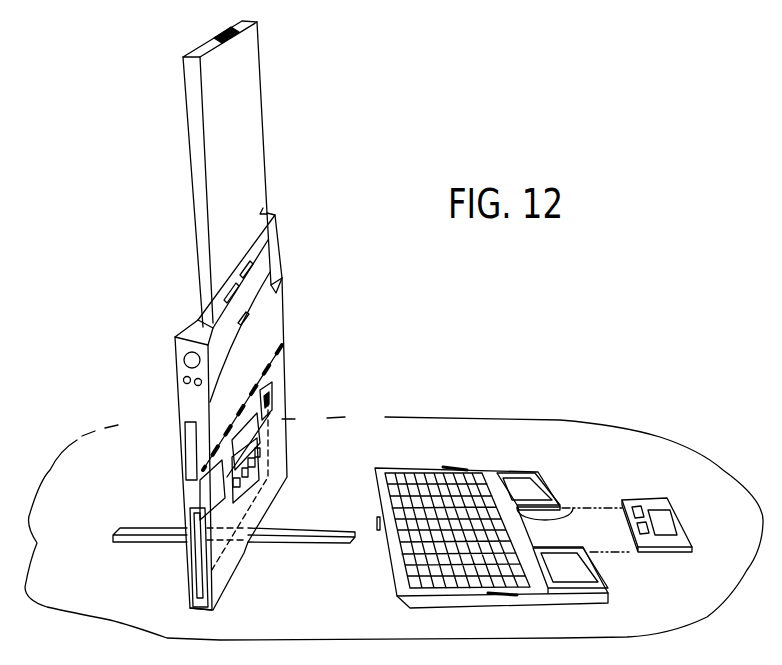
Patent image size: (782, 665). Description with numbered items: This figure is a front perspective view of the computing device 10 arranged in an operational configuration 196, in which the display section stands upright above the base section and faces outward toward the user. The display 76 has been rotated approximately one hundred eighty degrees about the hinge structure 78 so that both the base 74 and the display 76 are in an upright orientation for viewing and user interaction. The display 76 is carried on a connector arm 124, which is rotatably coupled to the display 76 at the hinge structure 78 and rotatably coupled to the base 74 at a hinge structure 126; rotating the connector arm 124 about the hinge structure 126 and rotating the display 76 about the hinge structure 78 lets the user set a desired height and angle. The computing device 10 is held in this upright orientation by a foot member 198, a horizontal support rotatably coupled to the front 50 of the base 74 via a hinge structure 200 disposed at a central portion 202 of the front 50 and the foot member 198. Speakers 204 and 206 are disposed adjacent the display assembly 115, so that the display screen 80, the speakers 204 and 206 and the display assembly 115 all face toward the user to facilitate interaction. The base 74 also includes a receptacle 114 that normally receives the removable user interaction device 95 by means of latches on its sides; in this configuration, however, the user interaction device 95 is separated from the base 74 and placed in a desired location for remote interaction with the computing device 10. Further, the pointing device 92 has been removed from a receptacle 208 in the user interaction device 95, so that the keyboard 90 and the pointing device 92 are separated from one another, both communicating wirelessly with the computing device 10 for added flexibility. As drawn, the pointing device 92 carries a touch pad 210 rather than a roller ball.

The computing device 10 is at (256, 328).
The operational configuration 196 is at (293, 106).
The display 76 is at (260, 44).
The display screen 80 is at (247, 156).
The hinge structure 78 is at (203, 335).
The connector arm 124 is at (253, 360).
The receptacle 114 is at (275, 370).
The speaker 206 is at (272, 412).
The display assembly 115 is at (255, 468).
The hinge structure 126 is at (200, 474).
The speaker 204 is at (220, 487).
The hinge structure 200 is at (273, 498).
The central portion 202 is at (245, 553).
The base 74 is at (190, 580).
The front 50 is at (200, 608).
The foot member 198 is at (280, 503).
The user interaction device 95 is at (487, 453).
The keyboard 90 is at (410, 473).
The pointing device 92 is at (626, 481).
The receptacle 208 is at (573, 510).
The touch pad 210 is at (675, 513).